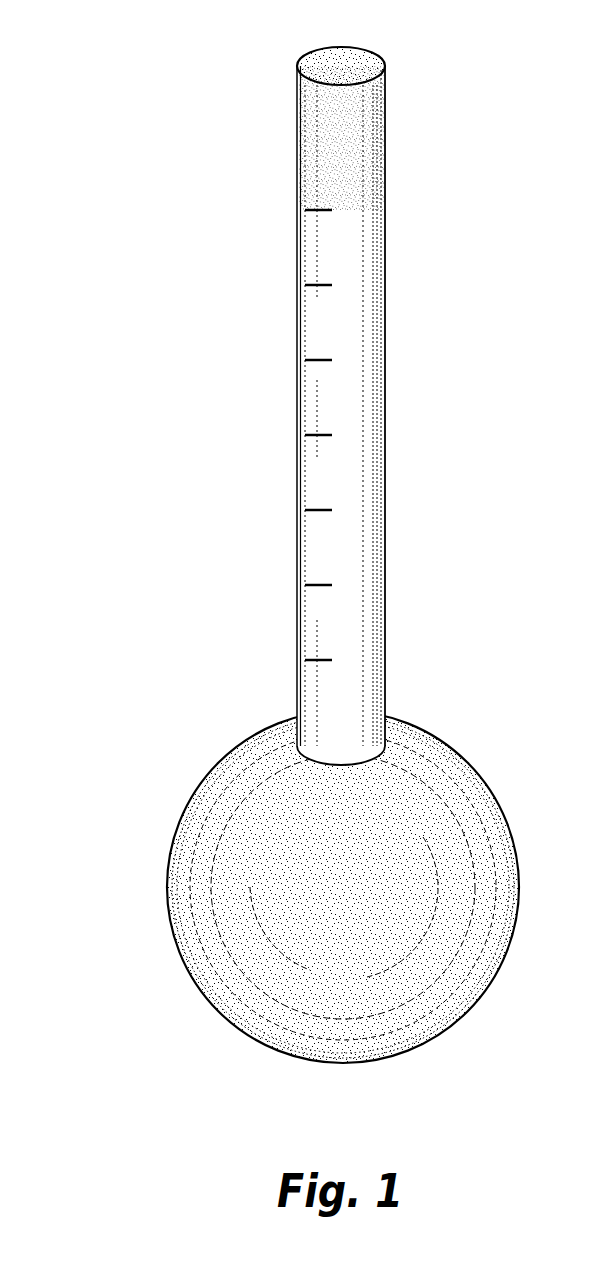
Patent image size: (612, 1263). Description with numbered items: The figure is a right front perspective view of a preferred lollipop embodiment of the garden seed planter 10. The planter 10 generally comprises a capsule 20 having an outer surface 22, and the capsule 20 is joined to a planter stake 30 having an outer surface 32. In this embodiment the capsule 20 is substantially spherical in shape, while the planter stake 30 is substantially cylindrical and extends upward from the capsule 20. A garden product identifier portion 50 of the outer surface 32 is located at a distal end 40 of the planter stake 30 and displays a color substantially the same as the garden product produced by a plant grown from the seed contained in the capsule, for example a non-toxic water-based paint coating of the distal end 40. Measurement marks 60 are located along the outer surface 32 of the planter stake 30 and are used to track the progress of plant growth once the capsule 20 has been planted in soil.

The garden seed planter 10 is at (110, 175).
The capsule 20 is at (202, 787).
The outer surface 22 is at (343, 887).
The planter stake 30 is at (297, 285).
The outer surface 32 is at (341, 415).
The distal end 40 is at (303, 45).
The garden product identifier portion 50 is at (318, 127).
The measurement marks 60 is at (318, 363).